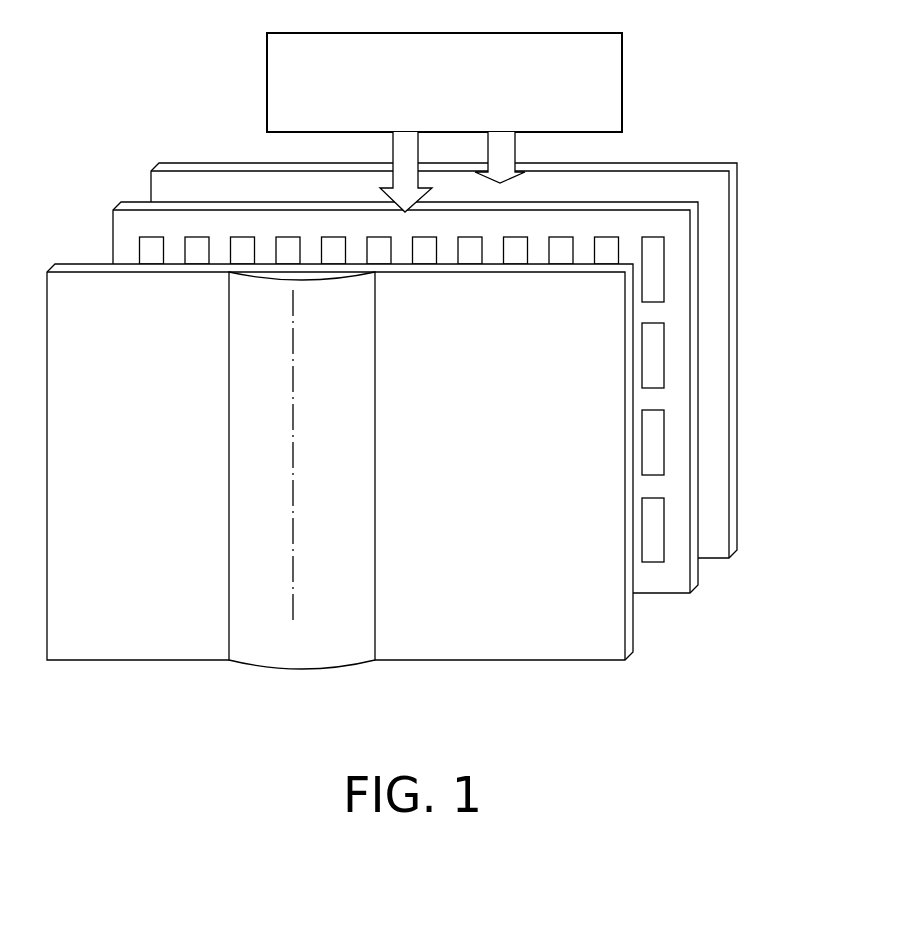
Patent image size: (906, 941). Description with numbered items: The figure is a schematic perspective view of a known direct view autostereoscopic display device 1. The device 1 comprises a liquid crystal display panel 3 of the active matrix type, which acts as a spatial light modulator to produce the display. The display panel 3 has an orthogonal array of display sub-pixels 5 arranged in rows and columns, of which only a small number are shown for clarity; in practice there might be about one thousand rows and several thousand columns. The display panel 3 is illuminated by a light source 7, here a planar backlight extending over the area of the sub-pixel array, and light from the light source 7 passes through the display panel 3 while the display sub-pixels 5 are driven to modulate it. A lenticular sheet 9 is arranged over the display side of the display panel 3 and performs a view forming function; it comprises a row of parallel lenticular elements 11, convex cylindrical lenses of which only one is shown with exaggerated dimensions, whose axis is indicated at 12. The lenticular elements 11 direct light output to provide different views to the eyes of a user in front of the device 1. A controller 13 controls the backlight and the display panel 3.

The autostereoscopic display device 1 is at (76, 152).
The liquid crystal display panel 3 is at (452, 397).
The display sub-pixels 5 is at (659, 277).
The light source 7 is at (739, 536).
The lenticular sheet 9 is at (635, 636).
The lenticular elements 11 is at (302, 497).
The rotation axis 12 is at (294, 430).
The controller 13 is at (626, 84).